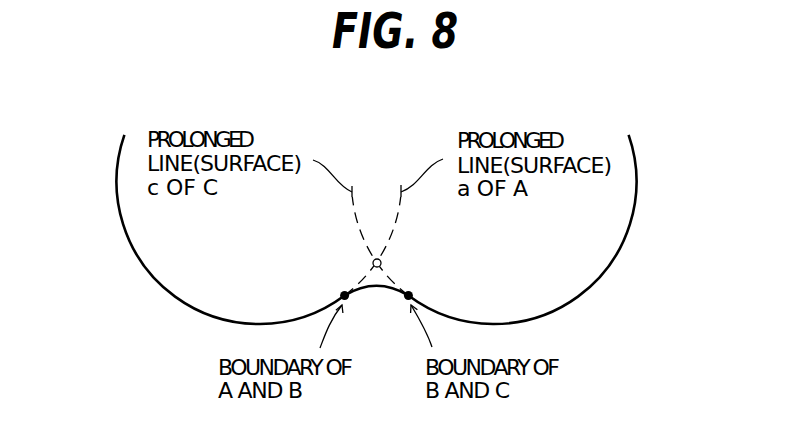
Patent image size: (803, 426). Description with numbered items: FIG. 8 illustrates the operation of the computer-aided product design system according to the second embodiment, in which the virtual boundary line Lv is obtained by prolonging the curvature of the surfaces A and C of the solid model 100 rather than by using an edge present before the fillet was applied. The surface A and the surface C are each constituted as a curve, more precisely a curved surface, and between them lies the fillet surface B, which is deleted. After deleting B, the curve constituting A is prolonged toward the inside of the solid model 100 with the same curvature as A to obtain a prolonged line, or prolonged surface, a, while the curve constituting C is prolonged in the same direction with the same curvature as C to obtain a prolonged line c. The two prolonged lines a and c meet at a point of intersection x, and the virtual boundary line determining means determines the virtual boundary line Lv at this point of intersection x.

The solid model 100 is at (376, 260).
The surface A is at (117, 190).
The surface B is at (450, 306).
The surface C is at (639, 190).
The point of intersection x is at (372, 264).
The virtual boundary line Lv is at (435, 245).